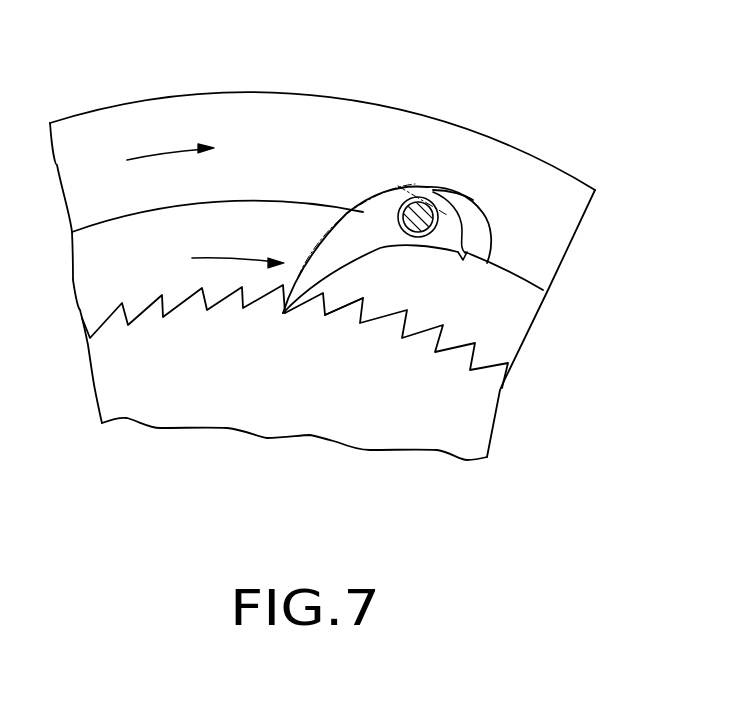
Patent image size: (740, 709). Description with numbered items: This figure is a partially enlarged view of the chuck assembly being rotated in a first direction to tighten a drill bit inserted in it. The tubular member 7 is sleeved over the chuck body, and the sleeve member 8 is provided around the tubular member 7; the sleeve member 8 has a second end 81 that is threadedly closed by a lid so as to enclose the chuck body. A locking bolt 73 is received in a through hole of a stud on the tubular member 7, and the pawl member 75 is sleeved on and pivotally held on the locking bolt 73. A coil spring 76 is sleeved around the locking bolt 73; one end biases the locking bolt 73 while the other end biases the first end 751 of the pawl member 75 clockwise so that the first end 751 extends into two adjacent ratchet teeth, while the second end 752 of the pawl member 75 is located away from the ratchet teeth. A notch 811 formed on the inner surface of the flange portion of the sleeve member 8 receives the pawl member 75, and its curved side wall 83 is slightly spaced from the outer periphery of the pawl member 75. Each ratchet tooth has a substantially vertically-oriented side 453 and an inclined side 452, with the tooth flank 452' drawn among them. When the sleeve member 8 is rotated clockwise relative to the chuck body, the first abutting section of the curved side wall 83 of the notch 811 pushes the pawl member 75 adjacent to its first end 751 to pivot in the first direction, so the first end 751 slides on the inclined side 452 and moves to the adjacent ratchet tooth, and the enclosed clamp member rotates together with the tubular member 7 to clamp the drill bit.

The tubular member 7 is at (223, 205).
The sleeve member 8 is at (128, 100).
The locking bolt 73 is at (426, 180).
The pawl member 75 is at (363, 233).
The coil spring 76 is at (388, 168).
The second end of the sleeve member 81 is at (462, 168).
The curved side wall 83 is at (470, 190).
The first end of the pawl member 751 is at (436, 172).
The second end of the pawl member 752 is at (493, 233).
The notch 811 is at (478, 210).
The inclined side 452 is at (189, 392).
The vertically-oriented side 453 is at (320, 310).
The tooth flank 452' is at (359, 359).